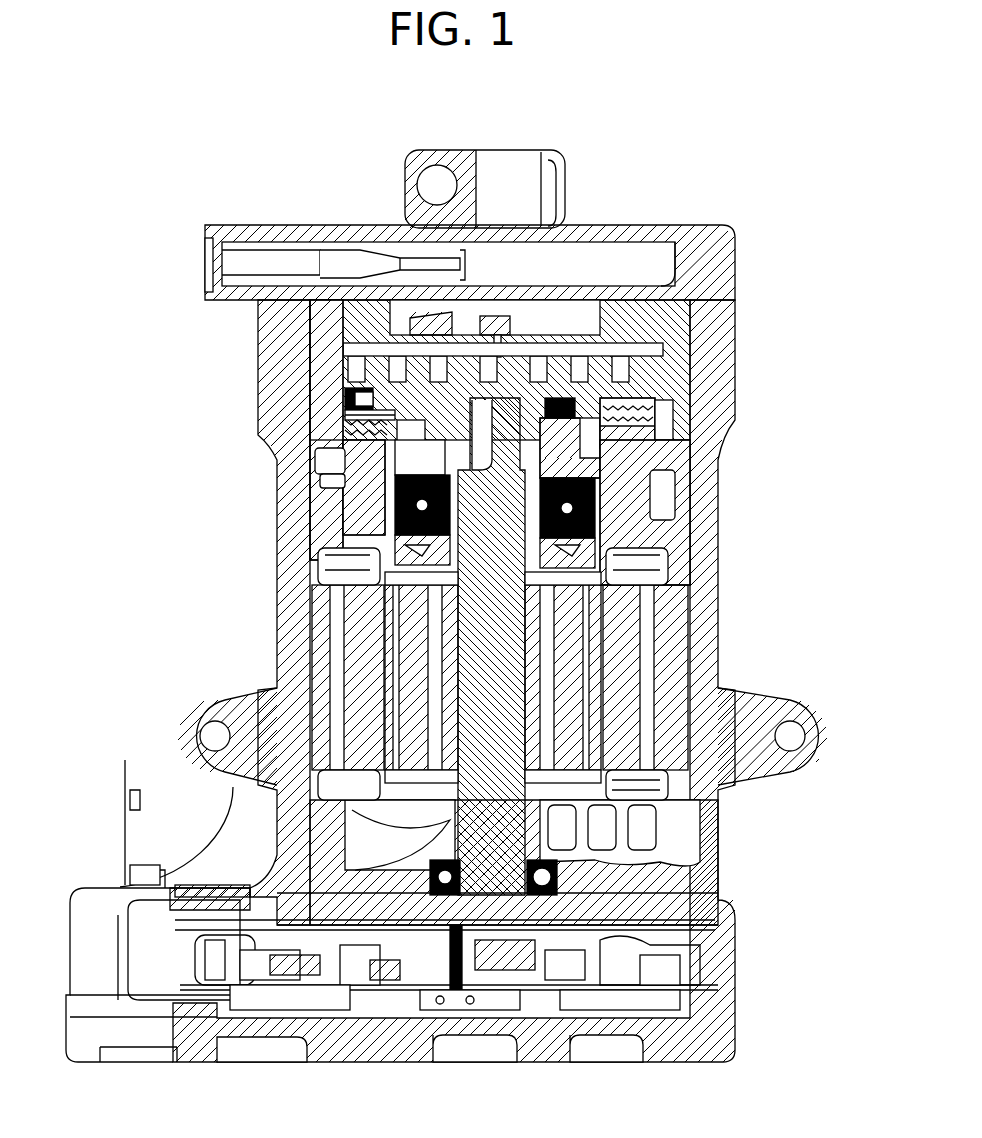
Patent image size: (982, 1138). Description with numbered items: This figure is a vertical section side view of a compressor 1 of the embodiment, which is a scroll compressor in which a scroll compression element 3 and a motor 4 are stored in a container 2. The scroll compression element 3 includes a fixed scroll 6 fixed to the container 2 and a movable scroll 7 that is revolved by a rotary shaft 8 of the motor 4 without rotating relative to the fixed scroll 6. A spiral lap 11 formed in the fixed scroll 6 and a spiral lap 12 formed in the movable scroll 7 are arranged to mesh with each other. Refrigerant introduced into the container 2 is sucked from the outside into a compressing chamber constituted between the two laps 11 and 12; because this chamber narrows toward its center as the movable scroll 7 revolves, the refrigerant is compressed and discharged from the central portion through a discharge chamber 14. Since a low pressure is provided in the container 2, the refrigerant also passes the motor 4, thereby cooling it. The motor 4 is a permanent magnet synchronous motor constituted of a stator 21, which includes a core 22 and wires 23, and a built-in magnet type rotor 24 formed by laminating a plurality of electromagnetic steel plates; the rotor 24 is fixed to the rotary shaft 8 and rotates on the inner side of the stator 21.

The compressor 1 is at (700, 176).
The container 2 is at (718, 527).
The scroll compression element 3 is at (690, 352).
The motor 4 is at (690, 606).
The fixed scroll 6 is at (315, 350).
The movable scroll 7 is at (355, 395).
The rotary shaft 8 is at (470, 640).
The spiral lap 11 is at (377, 365).
The spiral lap 12 is at (343, 365).
The discharge chamber 14 is at (565, 300).
The stator 21 is at (320, 672).
The core 22 is at (670, 660).
The wires 23 is at (640, 790).
The rotor 24 is at (585, 652).